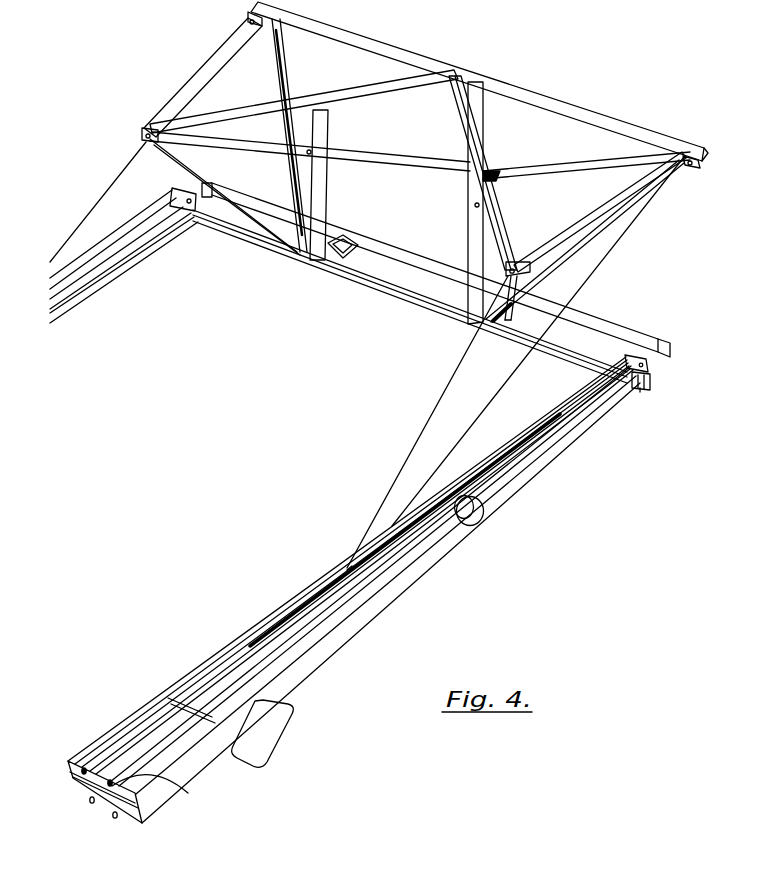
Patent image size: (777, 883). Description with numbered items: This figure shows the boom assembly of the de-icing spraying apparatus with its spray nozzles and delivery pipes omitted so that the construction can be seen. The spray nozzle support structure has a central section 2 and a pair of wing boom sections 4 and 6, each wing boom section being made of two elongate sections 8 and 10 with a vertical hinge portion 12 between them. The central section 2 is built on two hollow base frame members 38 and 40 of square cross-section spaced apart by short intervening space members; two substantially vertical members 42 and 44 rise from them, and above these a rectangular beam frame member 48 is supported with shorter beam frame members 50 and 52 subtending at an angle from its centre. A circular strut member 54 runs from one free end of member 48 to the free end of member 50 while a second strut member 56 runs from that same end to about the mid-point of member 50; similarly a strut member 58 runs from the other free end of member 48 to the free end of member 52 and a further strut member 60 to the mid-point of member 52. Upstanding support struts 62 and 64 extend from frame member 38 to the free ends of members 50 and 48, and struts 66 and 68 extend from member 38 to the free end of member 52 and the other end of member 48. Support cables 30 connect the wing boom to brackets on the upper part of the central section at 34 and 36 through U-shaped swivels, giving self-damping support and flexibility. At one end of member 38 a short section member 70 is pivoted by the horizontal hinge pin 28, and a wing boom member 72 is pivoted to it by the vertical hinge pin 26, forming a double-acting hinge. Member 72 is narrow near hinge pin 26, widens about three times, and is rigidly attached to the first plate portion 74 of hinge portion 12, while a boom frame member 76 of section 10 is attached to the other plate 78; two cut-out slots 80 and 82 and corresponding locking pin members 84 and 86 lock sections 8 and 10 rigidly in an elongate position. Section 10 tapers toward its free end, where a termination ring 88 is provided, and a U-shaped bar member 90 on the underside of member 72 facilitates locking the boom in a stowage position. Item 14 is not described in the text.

The central section 2 is at (354, 300).
The wing boom section 4 is at (337, 502).
The wing boom section 6 is at (109, 284).
The elongate section 8 is at (354, 590).
The elongate section 10 is at (284, 600).
The vertical hinge portion 12 is at (131, 775).
The lower beam 14 is at (340, 605).
The vertical hinge pin arrangement 26 is at (645, 365).
The horizontal hinge pin arrangement 28 is at (635, 385).
The support cables 30 is at (450, 453).
The cable connection point 34 is at (688, 163).
The cable connection point 36 is at (516, 266).
The base frame member 38 is at (453, 314).
The base frame member 40 is at (588, 316).
The vertical member 42 is at (313, 169).
The vertical member 44 is at (473, 230).
The beam frame member 48 is at (470, 77).
The beam frame member 50 is at (405, 78).
The beam frame member 52 is at (472, 117).
The strut member 54 is at (199, 82).
The strut member 56 is at (283, 57).
The strut member 58 is at (592, 214).
The strut member 60 is at (563, 164).
The upstanding support strut 62 is at (208, 178).
The upstanding support strut 64 is at (295, 154).
The upstanding support strut 66 is at (503, 326).
The upstanding support strut 68 is at (595, 232).
The short section member 70 is at (645, 380).
The wing boom member 72 is at (597, 392).
The first plate portion 74 is at (80, 795).
The boom frame member 76 is at (230, 657).
The plate 78 is at (83, 767).
The cut-out slot 80 is at (109, 779).
The cut-out slot 82 is at (161, 794).
The locking pin member 84 is at (92, 804).
The locking pin member 86 is at (115, 819).
The termination ring 88 is at (485, 519).
The U-shaped bar member 90 is at (262, 735).